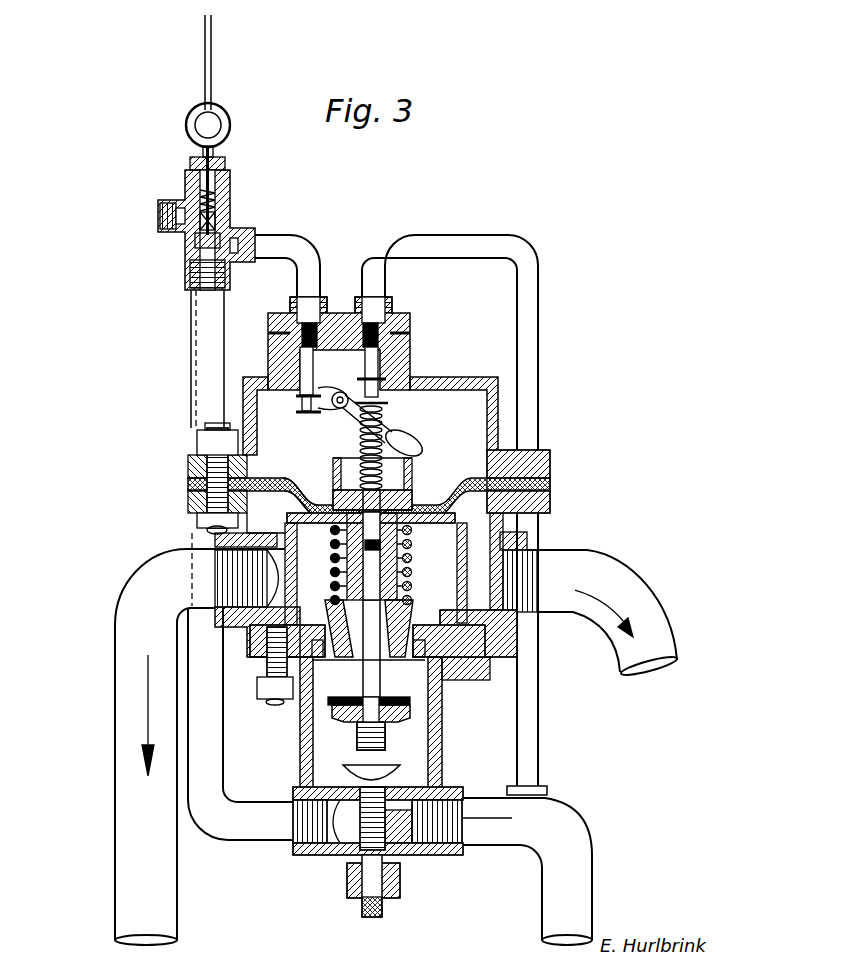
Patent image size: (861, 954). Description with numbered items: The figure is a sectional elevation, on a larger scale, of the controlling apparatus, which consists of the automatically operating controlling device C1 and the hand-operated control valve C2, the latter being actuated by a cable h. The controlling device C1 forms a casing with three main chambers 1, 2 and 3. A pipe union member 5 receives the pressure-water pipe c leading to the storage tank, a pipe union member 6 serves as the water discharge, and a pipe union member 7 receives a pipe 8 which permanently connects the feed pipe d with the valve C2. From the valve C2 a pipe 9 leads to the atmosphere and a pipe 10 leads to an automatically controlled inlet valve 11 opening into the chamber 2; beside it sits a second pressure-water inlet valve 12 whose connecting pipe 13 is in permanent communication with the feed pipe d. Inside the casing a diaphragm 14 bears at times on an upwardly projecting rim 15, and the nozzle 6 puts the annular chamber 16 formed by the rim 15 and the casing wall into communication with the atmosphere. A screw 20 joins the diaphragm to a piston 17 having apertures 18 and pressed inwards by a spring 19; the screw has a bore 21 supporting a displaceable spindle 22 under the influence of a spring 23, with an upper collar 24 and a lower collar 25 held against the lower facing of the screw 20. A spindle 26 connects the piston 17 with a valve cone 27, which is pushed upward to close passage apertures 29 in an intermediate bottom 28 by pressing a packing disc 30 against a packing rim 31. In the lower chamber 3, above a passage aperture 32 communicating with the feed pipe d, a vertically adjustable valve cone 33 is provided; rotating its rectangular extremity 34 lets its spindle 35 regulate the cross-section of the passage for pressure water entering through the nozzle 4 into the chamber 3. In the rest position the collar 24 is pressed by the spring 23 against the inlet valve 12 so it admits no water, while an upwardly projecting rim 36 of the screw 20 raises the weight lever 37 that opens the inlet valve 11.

The casing chamber 1 is at (452, 605).
The casing chamber 2 is at (466, 452).
The lower casing chamber 3 is at (418, 735).
The nozzle or pipe union 4 is at (445, 856).
The pipe union member 5 is at (245, 620).
The pipe union member for water discharge 6 is at (540, 546).
The pipe union member 7 is at (293, 843).
The pipe 8 is at (191, 338).
The pipe 9 is at (162, 238).
The pipe 10 is at (283, 240).
The inlet valve 11 is at (292, 372).
The pressure-water inlet valve 12 is at (398, 370).
The connecting pipe 13 is at (517, 298).
The diaphragm 14 is at (291, 489).
The upwardly projecting rim 15 is at (288, 481).
The annular chamber 16 is at (548, 478).
The piston 17 is at (318, 525).
The apertures 18 is at (452, 530).
The spring 19 is at (412, 585).
The screw 20 is at (346, 499).
The bore 21 is at (334, 492).
The displaceable spindle 22 is at (402, 506).
The spring 23 is at (362, 428).
The collar 24 is at (388, 405).
The collar 25 is at (371, 550).
The spindle 26 is at (340, 640).
The valve cone 27 is at (343, 712).
The intermediate bottom 28 is at (337, 620).
The passage apertures 29 is at (340, 658).
The packing disc 30 is at (353, 660).
The packing rim 31 is at (406, 657).
The passage aperture 32 is at (400, 782).
The valve cone 33 is at (355, 768).
The rectangular extremity 34 is at (384, 912).
The spindle 35 is at (356, 798).
The upwardly projecting rim 36 is at (412, 466).
The weight lever 37 is at (405, 442).
The cable h is at (210, 73).
The pressure-water pipe c is at (170, 880).
The feed pipe d is at (598, 843).
The controlling device C1 is at (387, 343).
The control valve C2 is at (228, 215).